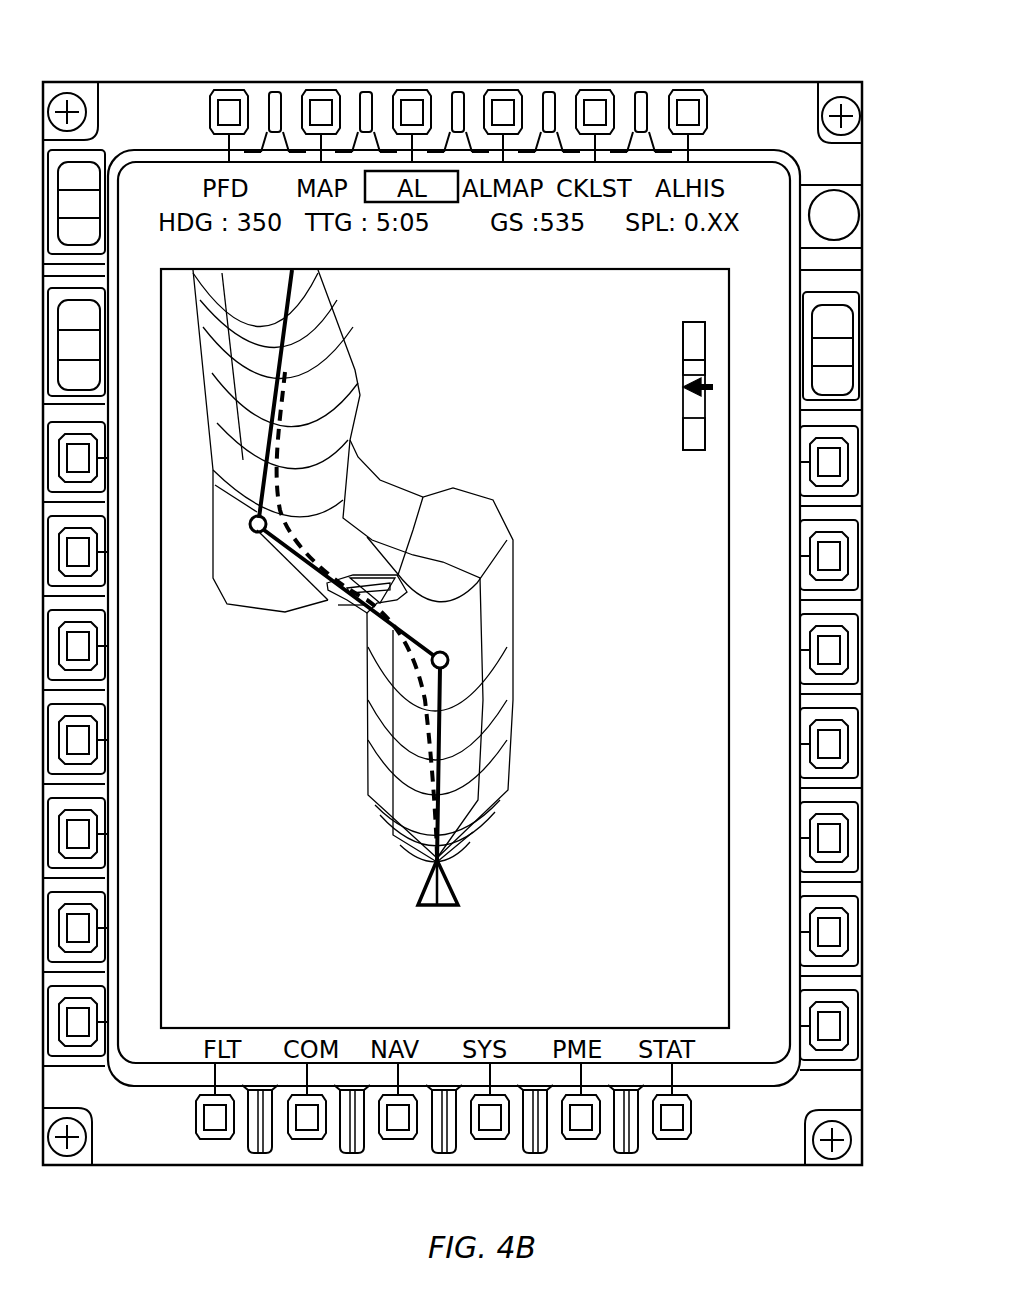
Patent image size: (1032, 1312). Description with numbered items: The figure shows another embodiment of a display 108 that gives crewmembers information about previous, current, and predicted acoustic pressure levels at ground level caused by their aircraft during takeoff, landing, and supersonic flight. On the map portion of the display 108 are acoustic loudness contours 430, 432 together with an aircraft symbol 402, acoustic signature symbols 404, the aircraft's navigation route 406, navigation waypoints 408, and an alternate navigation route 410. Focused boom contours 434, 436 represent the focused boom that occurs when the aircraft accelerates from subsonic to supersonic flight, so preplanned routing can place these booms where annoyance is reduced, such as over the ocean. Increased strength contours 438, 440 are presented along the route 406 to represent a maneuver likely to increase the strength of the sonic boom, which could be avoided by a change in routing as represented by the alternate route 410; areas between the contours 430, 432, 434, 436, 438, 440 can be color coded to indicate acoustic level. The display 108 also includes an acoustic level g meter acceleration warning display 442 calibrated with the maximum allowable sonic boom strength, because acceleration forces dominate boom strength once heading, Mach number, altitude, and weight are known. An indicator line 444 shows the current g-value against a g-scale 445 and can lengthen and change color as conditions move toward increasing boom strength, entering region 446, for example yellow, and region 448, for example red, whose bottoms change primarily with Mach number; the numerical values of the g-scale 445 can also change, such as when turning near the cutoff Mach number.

The display 108 is at (833, 66).
The aircraft symbol 402 is at (462, 901).
The acoustic signature symbols 404 is at (482, 771).
The aircraft's navigation route 406 is at (440, 724).
The navigation waypoints 408 is at (449, 661).
The alternate navigation routes 410 is at (273, 543).
The acoustic loudness contour 430 is at (352, 331).
The acoustic loudness contour 432 is at (342, 389).
The focused boom contour 434 is at (408, 843).
The focused boom contour 436 is at (417, 867).
The increased strength contour 438 is at (367, 615).
The increased strength contour 440 is at (342, 607).
The acoustic level g meter acceleration warning display 442 is at (706, 442).
The indicator line 444 is at (706, 383).
The g-scale 445 is at (636, 414).
The region 446 is at (700, 369).
The region 448 is at (700, 333).